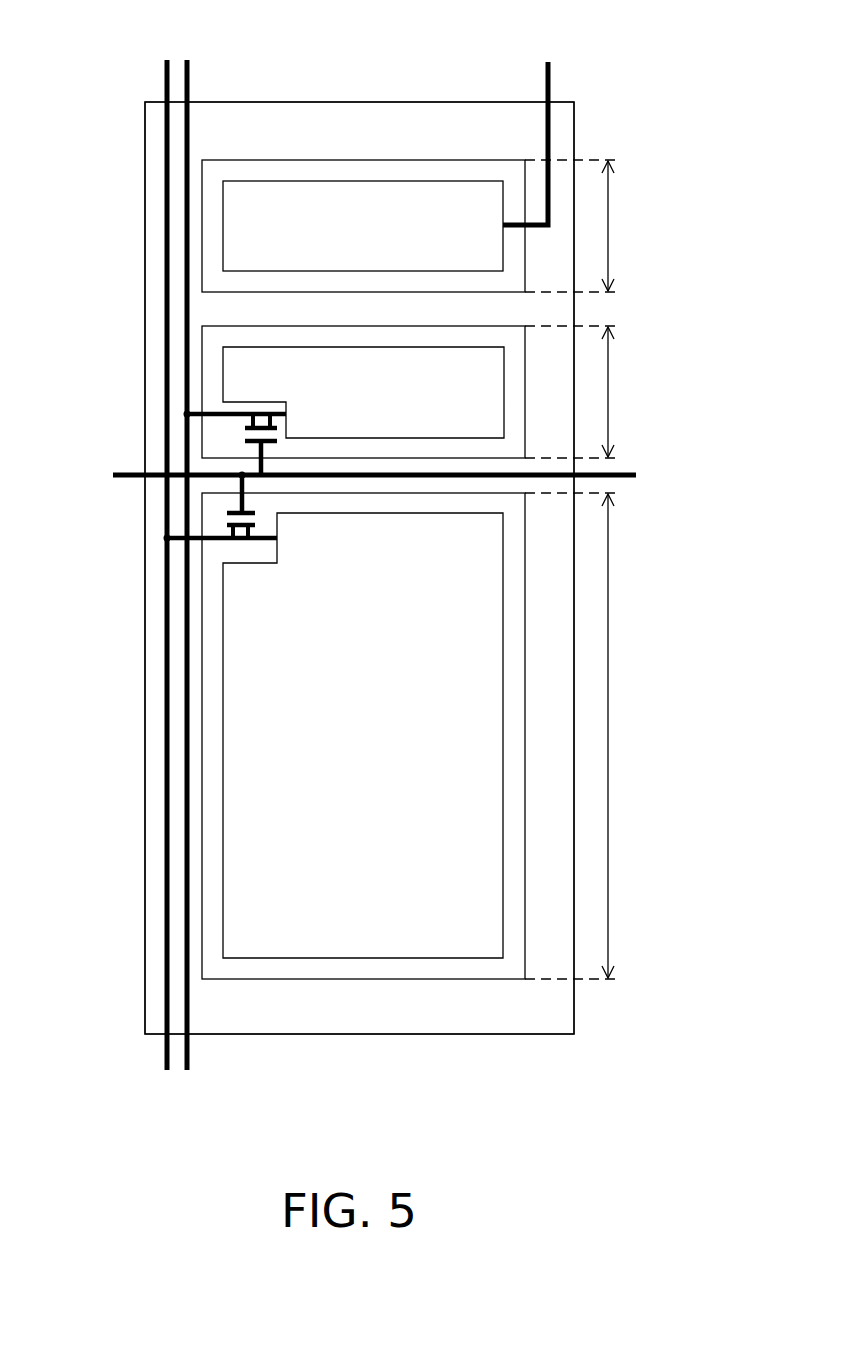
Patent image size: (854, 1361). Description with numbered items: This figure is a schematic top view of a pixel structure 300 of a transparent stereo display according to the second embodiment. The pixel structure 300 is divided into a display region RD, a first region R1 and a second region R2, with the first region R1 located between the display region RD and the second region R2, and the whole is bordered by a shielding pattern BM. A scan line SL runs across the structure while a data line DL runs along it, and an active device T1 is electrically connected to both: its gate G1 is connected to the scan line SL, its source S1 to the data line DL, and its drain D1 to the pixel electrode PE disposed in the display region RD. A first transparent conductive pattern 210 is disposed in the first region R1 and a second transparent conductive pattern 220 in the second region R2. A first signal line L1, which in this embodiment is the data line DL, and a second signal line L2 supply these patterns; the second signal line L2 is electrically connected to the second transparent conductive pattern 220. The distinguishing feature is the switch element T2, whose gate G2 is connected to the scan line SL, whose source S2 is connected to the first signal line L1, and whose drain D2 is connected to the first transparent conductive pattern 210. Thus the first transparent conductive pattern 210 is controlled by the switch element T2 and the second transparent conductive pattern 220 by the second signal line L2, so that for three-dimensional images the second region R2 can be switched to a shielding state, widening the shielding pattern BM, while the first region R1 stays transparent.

The pixel structure 300 is at (692, 1112).
The shielding pattern BM is at (158, 667).
The data line DL is at (159, 548).
The first signal line L1 is at (194, 548).
The second signal line L2 is at (531, 125).
The second transparent conductive pattern 220 is at (223, 237).
The first transparent conductive pattern 210 is at (223, 362).
The pixel electrode PE is at (223, 812).
The scan line SL is at (359, 475).
The active device T1 is at (159, 548).
The gate G1 is at (237, 506).
The source S1 is at (189, 546).
The drain D1 is at (260, 543).
The switch element T2 is at (163, 405).
The gate G2 is at (255, 445).
The source S2 is at (214, 413).
The drain D2 is at (272, 411).
The second region R2 is at (587, 226).
The first region R1 is at (587, 392).
The display region RD is at (587, 736).